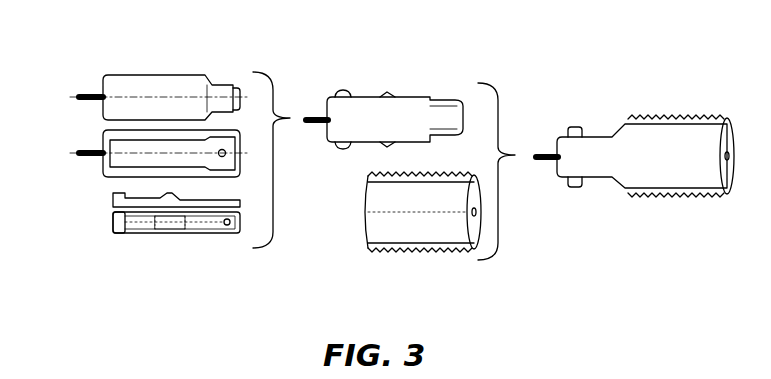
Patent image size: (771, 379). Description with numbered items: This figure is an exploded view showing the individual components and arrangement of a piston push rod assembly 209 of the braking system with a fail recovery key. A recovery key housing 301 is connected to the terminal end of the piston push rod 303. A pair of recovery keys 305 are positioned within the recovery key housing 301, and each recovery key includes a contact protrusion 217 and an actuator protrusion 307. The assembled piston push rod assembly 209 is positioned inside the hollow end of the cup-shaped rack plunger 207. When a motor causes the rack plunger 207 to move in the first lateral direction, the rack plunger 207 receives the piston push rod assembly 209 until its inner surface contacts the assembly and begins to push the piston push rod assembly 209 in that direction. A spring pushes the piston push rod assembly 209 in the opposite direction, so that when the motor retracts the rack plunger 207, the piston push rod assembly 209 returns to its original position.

The recovery key housing 301 is at (190, 86).
The piston push rod 303 is at (86, 101).
The recovery keys 305 is at (135, 239).
The contact protrusion 217 is at (125, 235).
The actuator protrusion 307 is at (172, 230).
The piston push rod assembly 209 is at (425, 97).
The rack plunger 207 is at (437, 255).